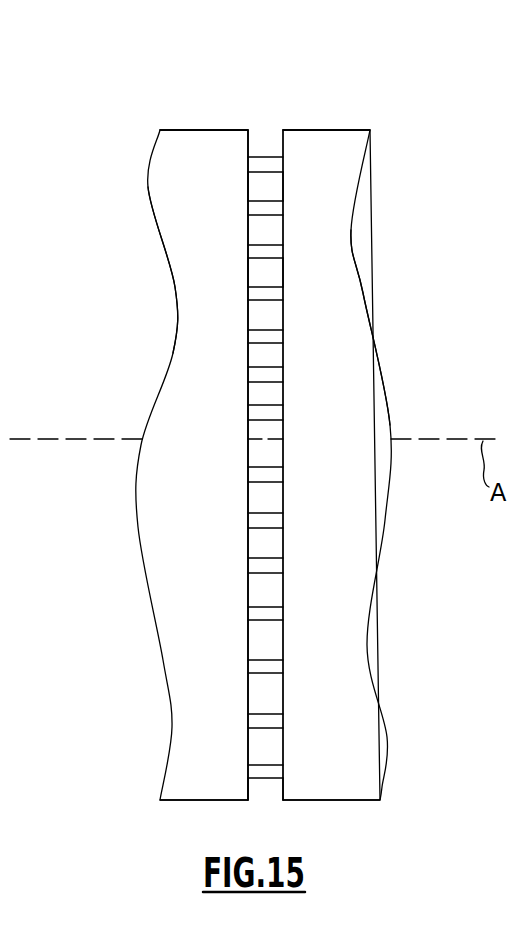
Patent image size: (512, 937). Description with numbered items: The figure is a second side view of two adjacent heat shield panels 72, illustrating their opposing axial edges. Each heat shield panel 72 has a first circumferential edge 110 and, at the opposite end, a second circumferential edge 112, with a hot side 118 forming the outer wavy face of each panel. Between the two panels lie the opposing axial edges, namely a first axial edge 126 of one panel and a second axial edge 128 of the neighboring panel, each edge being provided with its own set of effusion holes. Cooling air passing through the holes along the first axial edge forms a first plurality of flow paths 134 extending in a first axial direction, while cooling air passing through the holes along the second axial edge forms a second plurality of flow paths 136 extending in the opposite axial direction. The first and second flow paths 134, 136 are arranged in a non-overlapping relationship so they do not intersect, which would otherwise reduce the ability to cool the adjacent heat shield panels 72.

The heat shield panel 72 is at (200, 93).
The first circumferential edge 110 is at (176, 801).
The second circumferential edge 112 is at (173, 129).
The hot side 118 is at (198, 294).
The first axial edge 126 is at (278, 795).
The second axial edge 128 is at (257, 141).
The first plurality of flow paths 134 is at (263, 201).
The second plurality of flow paths 136 is at (262, 170).